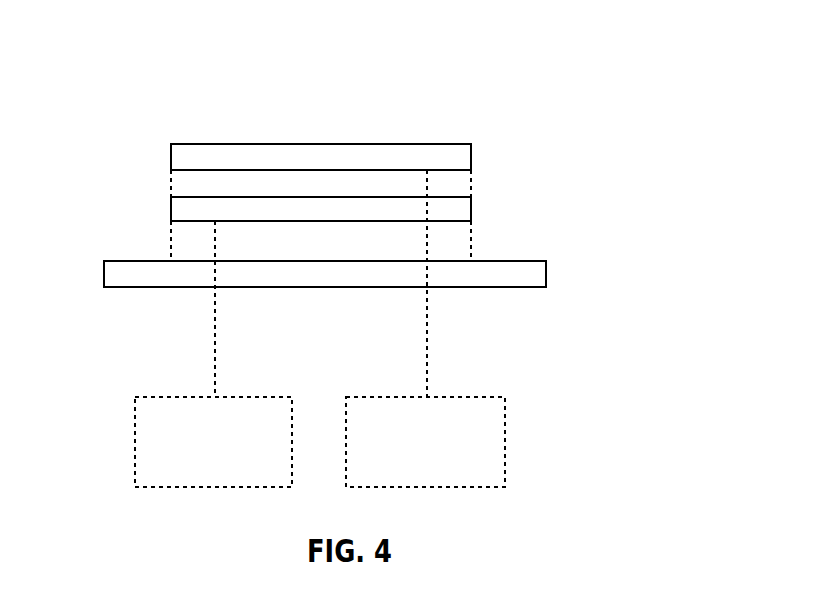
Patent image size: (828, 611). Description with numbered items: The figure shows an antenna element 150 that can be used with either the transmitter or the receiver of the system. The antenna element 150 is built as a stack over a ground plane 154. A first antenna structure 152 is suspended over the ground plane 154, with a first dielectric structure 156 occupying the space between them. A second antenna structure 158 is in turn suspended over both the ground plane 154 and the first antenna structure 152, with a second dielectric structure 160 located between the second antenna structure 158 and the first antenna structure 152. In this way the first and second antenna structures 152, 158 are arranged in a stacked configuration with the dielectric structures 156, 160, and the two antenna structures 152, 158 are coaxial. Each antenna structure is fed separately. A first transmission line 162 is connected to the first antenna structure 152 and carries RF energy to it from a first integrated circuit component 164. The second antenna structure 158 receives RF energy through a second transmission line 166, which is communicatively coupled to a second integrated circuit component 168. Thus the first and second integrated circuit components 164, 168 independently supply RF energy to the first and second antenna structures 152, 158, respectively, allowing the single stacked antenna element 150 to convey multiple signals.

The antenna element 150 is at (178, 56).
The first antenna structure 152 is at (333, 210).
The ground plane 154 is at (522, 274).
The first dielectric structure 156 is at (463, 240).
The second antenna structure 158 is at (378, 152).
The second dielectric structure 160 is at (463, 185).
The first transmission line 162 is at (215, 343).
The first integrated circuit component 164 is at (135, 451).
The second transmission line 166 is at (427, 353).
The second integrated circuit component 168 is at (505, 448).